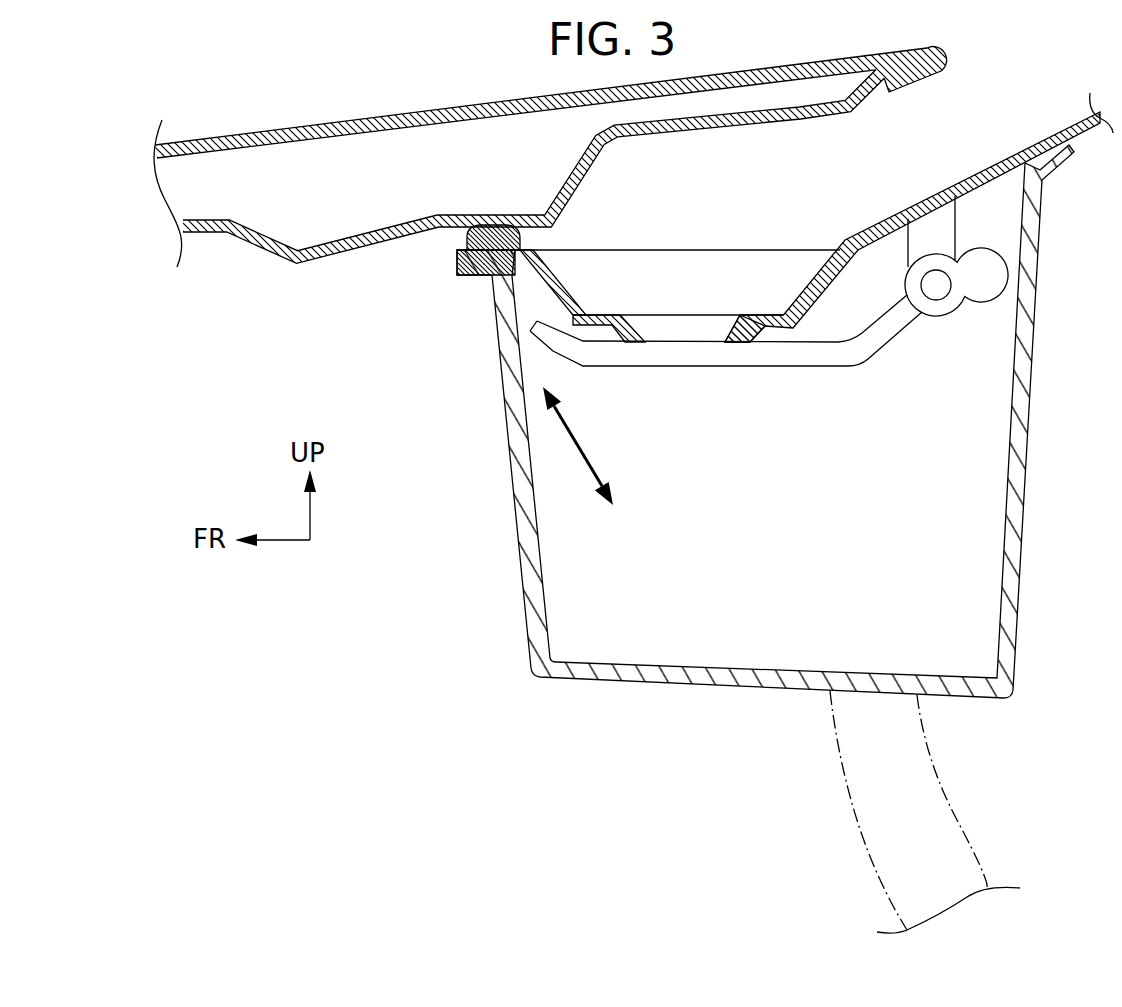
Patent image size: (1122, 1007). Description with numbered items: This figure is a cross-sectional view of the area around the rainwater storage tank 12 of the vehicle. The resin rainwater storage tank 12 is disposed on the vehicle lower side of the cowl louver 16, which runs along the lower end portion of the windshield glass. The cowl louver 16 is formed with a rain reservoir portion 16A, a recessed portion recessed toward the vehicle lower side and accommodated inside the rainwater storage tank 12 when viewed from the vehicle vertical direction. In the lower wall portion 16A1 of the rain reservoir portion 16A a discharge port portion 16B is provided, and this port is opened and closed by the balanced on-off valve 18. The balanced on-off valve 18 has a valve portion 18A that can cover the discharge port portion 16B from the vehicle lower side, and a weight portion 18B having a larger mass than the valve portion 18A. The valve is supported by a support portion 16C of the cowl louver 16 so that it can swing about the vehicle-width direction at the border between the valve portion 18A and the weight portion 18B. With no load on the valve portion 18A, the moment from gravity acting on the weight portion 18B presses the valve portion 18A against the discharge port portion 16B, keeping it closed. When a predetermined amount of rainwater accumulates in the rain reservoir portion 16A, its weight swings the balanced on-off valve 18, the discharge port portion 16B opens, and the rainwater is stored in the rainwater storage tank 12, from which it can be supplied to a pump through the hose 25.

The rainwater storage tank 12 is at (1033, 354).
The cowl louver 16 is at (785, 265).
The rain reservoir portion 16A is at (806, 270).
The lower wall portion 16A1 is at (765, 327).
The discharge port portion 16B is at (638, 332).
The support portion 16C is at (940, 235).
The balanced on-off valve 18 is at (824, 349).
The valve portion 18A is at (665, 358).
The weight portion 18B is at (993, 273).
The hose 25 is at (933, 777).